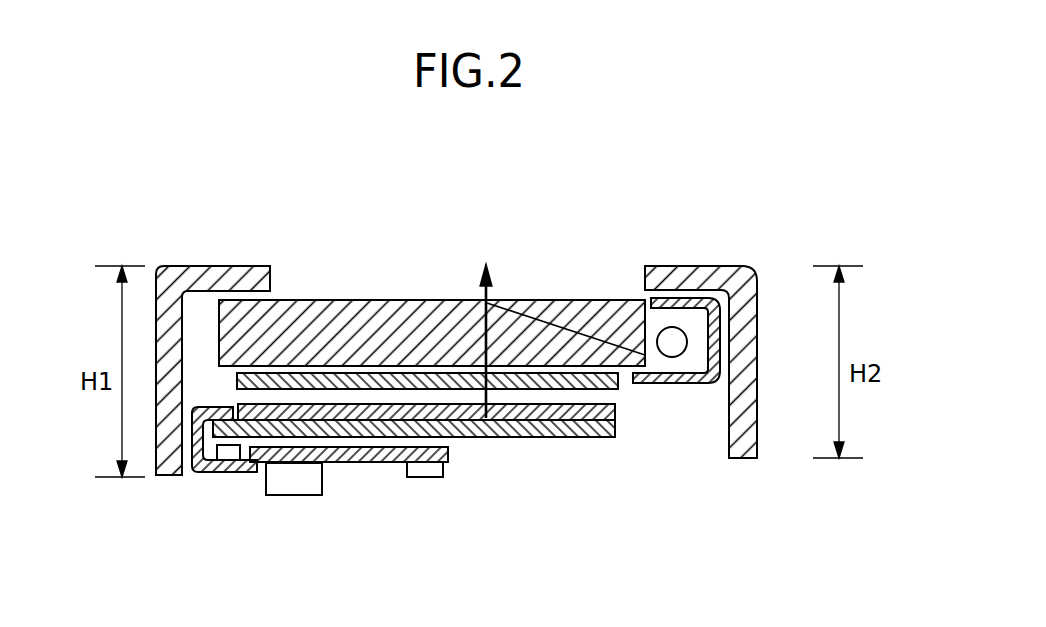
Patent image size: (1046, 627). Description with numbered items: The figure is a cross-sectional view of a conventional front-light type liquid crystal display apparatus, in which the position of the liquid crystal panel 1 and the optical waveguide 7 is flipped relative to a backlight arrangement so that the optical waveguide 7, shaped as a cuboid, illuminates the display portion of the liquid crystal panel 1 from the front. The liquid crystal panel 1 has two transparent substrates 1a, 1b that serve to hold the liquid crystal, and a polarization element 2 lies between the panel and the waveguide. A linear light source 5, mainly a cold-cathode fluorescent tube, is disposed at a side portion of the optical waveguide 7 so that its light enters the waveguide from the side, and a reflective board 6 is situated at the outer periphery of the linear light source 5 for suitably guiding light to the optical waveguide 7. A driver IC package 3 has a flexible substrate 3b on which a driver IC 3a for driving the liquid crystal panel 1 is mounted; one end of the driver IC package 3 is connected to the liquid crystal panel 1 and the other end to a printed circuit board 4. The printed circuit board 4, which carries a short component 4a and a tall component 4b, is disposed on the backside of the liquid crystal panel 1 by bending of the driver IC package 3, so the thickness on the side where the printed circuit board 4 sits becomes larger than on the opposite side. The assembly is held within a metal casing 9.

The liquid crystal panel 1 is at (470, 461).
The transparent substrate 1a is at (615, 412).
The transparent substrate 1b is at (610, 438).
The polarization element 2 is at (380, 373).
The driver IC package 3 is at (207, 483).
The driver IC 3a is at (226, 461).
The flexible substrate 3b is at (253, 473).
The printed circuit board 4 is at (393, 503).
The short component 4a is at (423, 478).
The tall component 4b is at (302, 486).
The linear light source 5 is at (680, 343).
The reflective board 6 is at (670, 388).
The optical waveguide 7 is at (575, 316).
The metal casing 9 is at (232, 278).